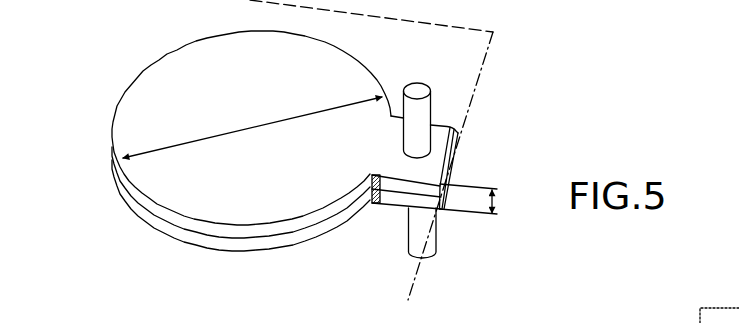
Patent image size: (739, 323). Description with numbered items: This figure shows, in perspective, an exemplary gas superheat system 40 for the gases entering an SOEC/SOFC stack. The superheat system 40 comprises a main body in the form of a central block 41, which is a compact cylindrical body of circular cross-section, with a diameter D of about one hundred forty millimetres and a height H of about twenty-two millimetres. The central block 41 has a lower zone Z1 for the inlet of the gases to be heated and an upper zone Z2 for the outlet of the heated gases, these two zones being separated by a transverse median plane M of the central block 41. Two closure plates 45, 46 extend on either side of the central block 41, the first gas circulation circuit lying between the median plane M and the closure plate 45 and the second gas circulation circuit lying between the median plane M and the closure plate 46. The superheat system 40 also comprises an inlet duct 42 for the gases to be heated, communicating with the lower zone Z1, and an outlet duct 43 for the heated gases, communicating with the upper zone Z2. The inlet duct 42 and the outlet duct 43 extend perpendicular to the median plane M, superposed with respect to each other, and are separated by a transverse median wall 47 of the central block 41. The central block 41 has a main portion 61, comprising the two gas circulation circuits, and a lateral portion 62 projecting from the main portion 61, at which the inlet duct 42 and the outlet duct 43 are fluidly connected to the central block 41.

The superheat system 40 is at (96, 125).
The central block 41 is at (267, 232).
The inlet duct 42 is at (430, 249).
The outlet duct 43 is at (423, 107).
The closure plate 45 is at (207, 249).
The closure plate 46 is at (147, 82).
The transverse median wall 47 is at (306, 232).
The main portion 61 is at (191, 61).
The lateral portion 62 is at (444, 143).
The lower zone Z1 is at (175, 237).
The upper zone Z2 is at (151, 211).
The diameter D is at (252, 127).
The height H is at (477, 199).
The transverse median plane M is at (463, 34).